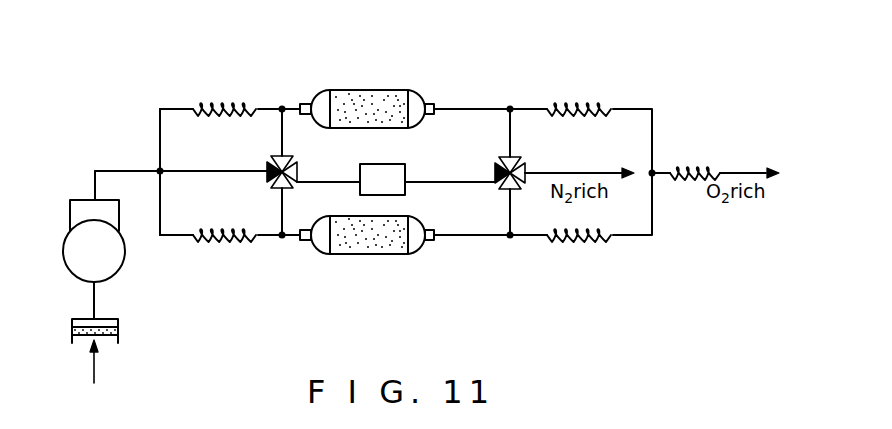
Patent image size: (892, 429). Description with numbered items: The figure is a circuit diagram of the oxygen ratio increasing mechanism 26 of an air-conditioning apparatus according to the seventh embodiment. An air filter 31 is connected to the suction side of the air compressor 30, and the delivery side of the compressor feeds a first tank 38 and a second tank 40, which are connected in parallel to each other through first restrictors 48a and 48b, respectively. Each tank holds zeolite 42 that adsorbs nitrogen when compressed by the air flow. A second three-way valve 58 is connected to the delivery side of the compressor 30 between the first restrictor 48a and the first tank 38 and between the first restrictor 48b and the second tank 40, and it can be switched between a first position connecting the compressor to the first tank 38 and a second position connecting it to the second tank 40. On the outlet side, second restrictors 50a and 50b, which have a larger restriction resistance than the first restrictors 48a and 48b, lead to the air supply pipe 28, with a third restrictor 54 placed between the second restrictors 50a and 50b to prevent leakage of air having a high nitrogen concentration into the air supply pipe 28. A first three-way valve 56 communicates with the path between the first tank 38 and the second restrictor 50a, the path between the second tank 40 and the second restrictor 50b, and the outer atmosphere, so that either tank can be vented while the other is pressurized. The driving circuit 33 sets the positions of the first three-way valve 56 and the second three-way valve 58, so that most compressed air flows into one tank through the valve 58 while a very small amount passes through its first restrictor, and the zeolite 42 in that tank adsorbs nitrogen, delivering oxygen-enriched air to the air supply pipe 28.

The oxygen ratio increasing mechanism 26 is at (312, 75).
The air supply pipe 28 is at (736, 167).
The air compressor 30 is at (120, 255).
The air filter 31 is at (118, 330).
The driving circuit 33 is at (398, 180).
The first tank 38 is at (403, 84).
The second tank 40 is at (401, 264).
The zeolite 42 is at (375, 87).
The first restrictor 48a is at (207, 102).
The first restrictor 48b is at (231, 248).
The second restrictor 50a is at (576, 100).
The second restrictor 50b is at (578, 250).
The third restrictor 54 is at (687, 159).
The first three-way valve 56 is at (499, 171).
The second three-way valve 58 is at (293, 174).